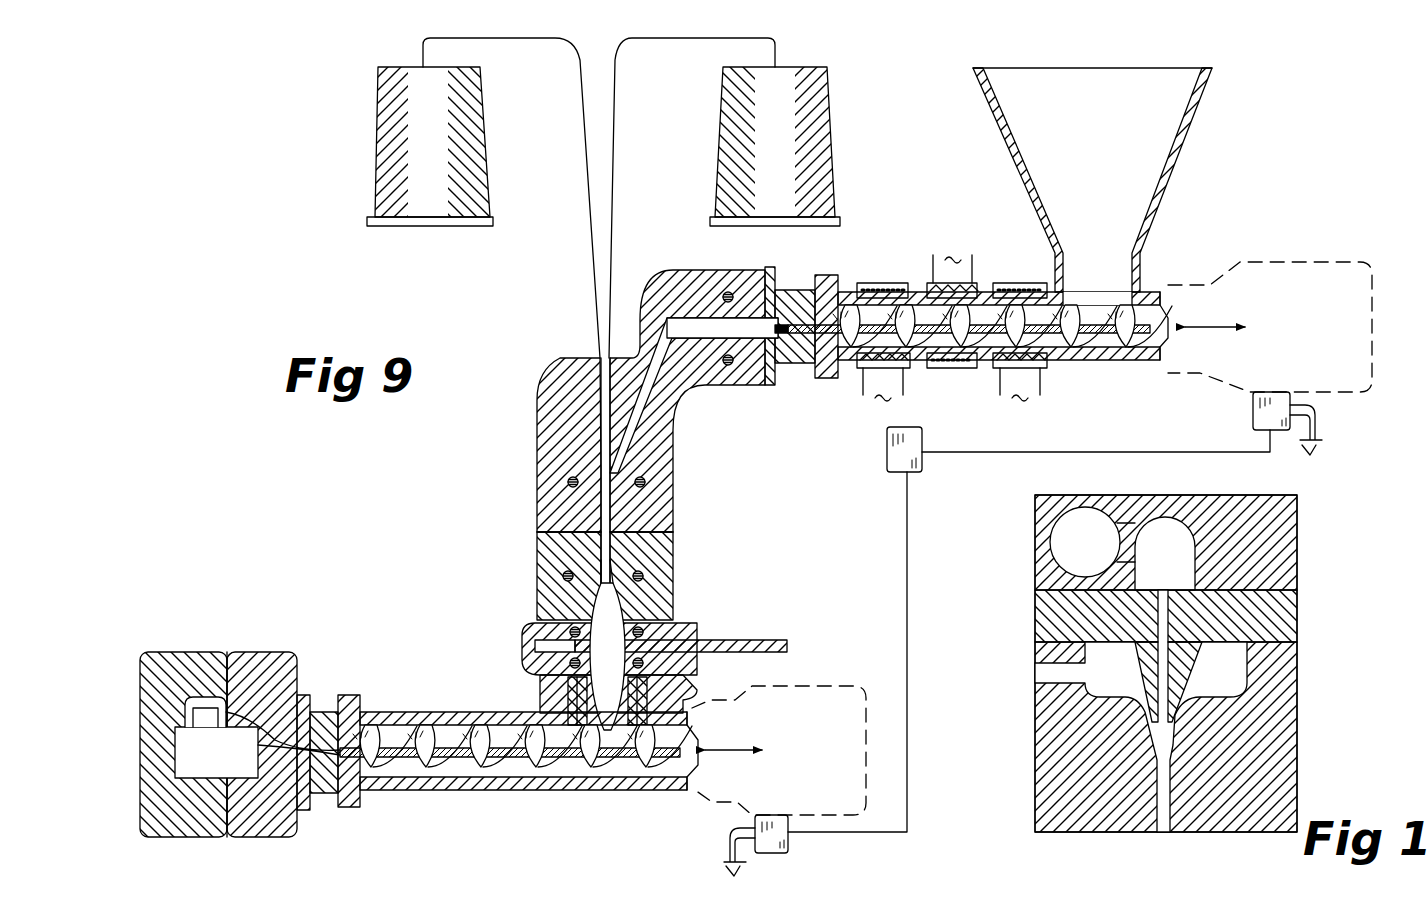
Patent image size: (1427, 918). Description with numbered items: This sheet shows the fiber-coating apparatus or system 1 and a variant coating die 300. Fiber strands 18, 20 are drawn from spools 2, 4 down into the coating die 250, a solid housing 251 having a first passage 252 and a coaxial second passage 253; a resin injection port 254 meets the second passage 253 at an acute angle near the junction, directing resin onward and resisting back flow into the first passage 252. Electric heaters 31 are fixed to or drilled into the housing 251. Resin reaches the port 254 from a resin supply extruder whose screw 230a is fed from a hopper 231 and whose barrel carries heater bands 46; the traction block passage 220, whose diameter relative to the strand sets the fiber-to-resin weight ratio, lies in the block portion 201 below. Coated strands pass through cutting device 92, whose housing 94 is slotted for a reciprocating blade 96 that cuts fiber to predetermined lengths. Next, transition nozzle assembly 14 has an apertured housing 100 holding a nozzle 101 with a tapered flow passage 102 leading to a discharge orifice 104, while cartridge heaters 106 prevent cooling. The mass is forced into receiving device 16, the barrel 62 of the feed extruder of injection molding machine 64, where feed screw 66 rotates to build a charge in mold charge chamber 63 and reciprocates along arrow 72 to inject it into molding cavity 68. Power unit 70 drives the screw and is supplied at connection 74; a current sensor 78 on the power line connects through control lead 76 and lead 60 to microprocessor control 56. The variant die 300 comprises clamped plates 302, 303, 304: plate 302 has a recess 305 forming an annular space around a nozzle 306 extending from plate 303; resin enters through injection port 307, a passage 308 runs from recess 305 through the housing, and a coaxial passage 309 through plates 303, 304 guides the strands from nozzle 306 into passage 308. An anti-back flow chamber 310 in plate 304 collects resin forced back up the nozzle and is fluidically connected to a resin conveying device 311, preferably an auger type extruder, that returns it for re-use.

In FIG. 9, the extrusion apparatus 1 is at (422, 306).
In FIG. 9, the spool of fiber 2 is at (376, 95).
In FIG. 9, the spool of fiber 4 is at (836, 122).
In FIG. 9, the transition nozzle assembly 14 is at (522, 672).
In FIG. 9, the receiving device 16 is at (385, 708).
In FIG. 9, the fiber strand 18 is at (552, 40).
In FIG. 9, the fiber strand 20 is at (666, 40).
In FIG. 9, the electric heaters 31 is at (728, 292).
In FIG. 9, the heaters 46 is at (990, 370).
In FIG. 9, the microprocessor control 56 is at (888, 470).
In FIG. 9, the control line 60 is at (1000, 452).
In FIG. 9, the barrel 62 is at (413, 712).
In FIG. 9, the mold charge chamber 63 is at (815, 305).
In FIG. 9, the injection molding machine 64 is at (237, 650).
In FIG. 9, the feed screw 66 is at (395, 765).
In FIG. 9, the molding cavity 68 is at (203, 775).
In FIG. 9, the power unit 70 is at (1368, 262).
In FIG. 9, the arrow 72 is at (1232, 327).
In FIG. 9, the connection 74 is at (1316, 432).
In FIG. 9, the control lead 76 is at (907, 560).
In FIG. 9, the electrical current sensor 78 is at (1253, 415).
In FIG. 9, the cutting device 92 is at (518, 624).
In FIG. 9, the housing 94 is at (690, 628).
In FIG. 9, the cutting blade 96 is at (787, 643).
In FIG. 9, the apertured housing 100 is at (540, 692).
In FIG. 9, the nozzle 101 is at (658, 694).
In FIG. 9, the flow passage 102 is at (565, 692).
In FIG. 9, the discharge orifice 104 is at (596, 727).
In FIG. 9, the cartridge heaters 106 is at (648, 725).
In FIG. 9, the lower block half 201 is at (537, 550).
In FIG. 9, the traction block passage 220 is at (612, 550).
In FIG. 9, the extruder screw 230a is at (1110, 340).
In FIG. 9, the hopper 231 is at (1215, 75).
In FIG. 9, the coating die 250 is at (536, 370).
In FIG. 9, the solid housing 251 is at (537, 517).
In FIG. 9, the first passage 252 is at (600, 358).
In FIG. 9, the second passage 253 is at (610, 518).
In FIG. 9, the resin injection port 254 is at (636, 420).
In FIG. 11, the coating die 300 is at (1310, 520).
In FIG. 11, the plate 302 is at (1298, 660).
In FIG. 11, the plate 303 is at (1298, 612).
In FIG. 11, the plate 304 is at (1298, 568).
In FIG. 11, the recess 305 is at (1100, 692).
In FIG. 11, the nozzle 306 is at (1195, 680).
In FIG. 11, the resin injection port 307 is at (1040, 665).
In FIG. 11, the passage 308 is at (1165, 832).
In FIG. 11, the passage 309 is at (1165, 515).
In FIG. 11, the anti-back flow chamber 310 is at (1185, 540).
In FIG. 11, the resin conveying device 311 is at (1055, 545).